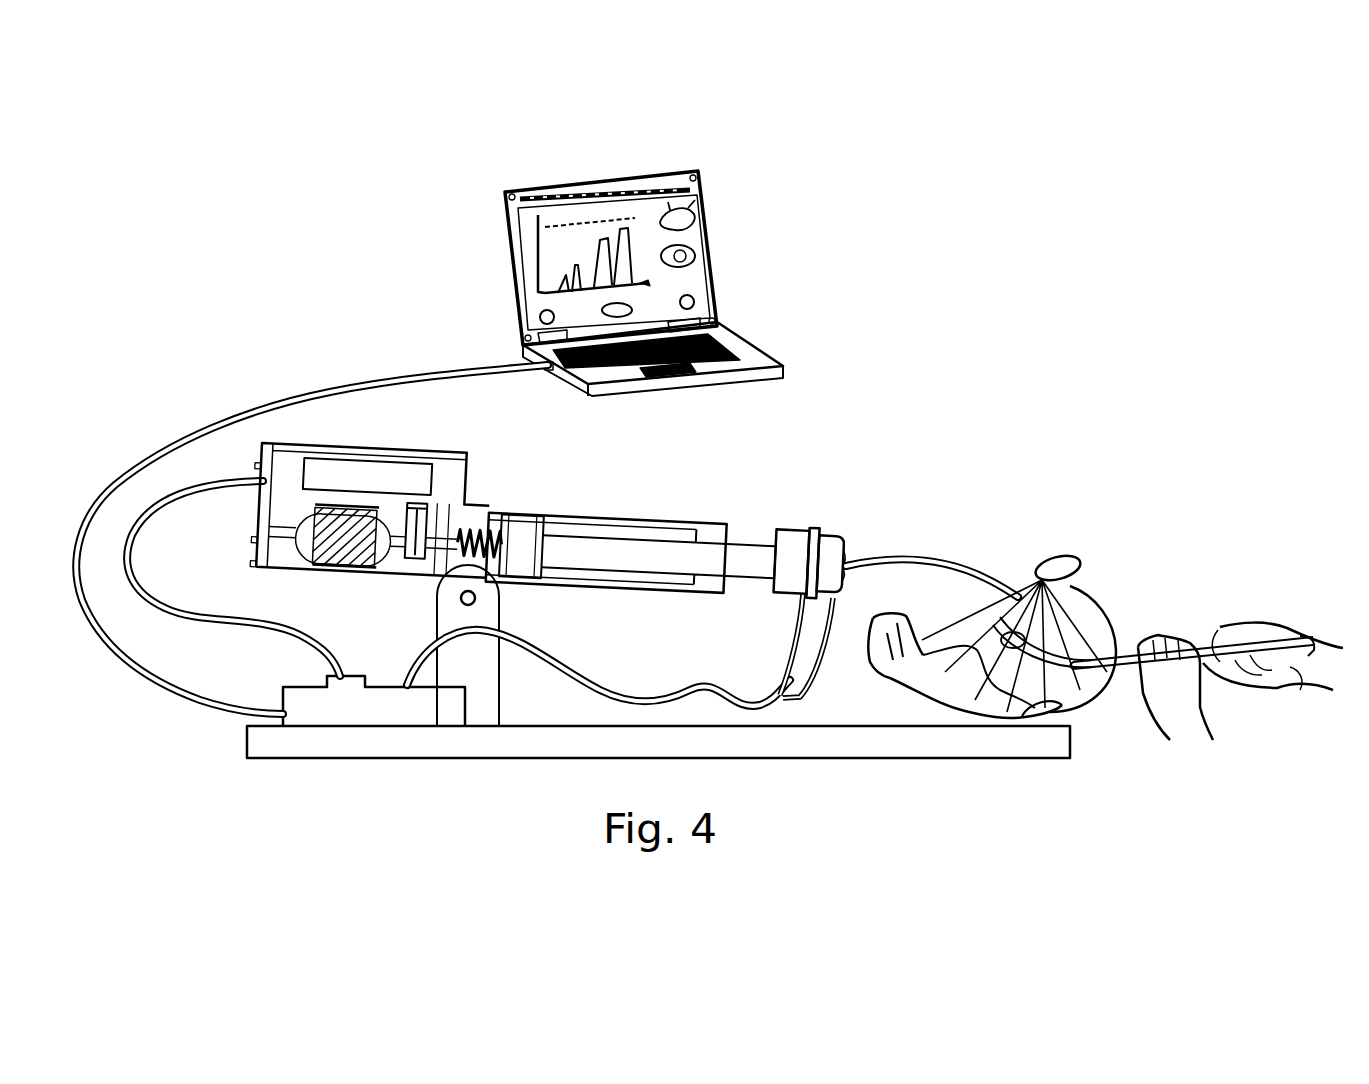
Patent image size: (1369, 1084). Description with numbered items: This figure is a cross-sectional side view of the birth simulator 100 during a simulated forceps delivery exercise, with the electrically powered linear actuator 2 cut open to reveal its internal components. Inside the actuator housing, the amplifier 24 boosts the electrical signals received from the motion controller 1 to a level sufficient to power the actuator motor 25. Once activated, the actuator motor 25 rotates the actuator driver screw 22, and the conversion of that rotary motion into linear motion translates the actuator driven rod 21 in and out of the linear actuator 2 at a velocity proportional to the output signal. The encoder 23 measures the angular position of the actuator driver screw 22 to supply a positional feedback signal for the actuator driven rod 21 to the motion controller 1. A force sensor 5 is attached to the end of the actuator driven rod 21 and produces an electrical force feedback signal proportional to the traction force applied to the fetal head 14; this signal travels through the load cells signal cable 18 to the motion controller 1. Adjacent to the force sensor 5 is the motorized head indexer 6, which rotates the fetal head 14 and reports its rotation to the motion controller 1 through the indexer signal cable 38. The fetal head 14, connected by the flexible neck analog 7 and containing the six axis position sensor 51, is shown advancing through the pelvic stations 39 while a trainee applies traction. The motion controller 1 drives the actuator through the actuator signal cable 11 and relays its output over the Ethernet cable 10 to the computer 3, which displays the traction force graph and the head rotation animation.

The birth simulator 100 is at (902, 320).
The motion controller 1 is at (300, 702).
The linear actuator 2 is at (632, 485).
The computer 3 is at (720, 268).
The force sensor 5 is at (797, 545).
The motorized head indexer 6 is at (830, 545).
The neck analog 7 is at (923, 562).
The Ethernet cable 10 is at (380, 392).
The actuator signal cable 11 is at (242, 481).
The fetal head 14 is at (1097, 622).
The load cells signal cable 18 is at (787, 650).
The actuator driven rod 21 is at (757, 548).
The actuator driver screw 22 is at (522, 533).
The encoder 23 is at (433, 513).
The amplifier 24 is at (337, 468).
The actuator motor 25 is at (352, 560).
The indexer signal cable 38 is at (813, 668).
The pelvic stations 39 is at (1020, 566).
The six axis position sensor 51 is at (1080, 593).